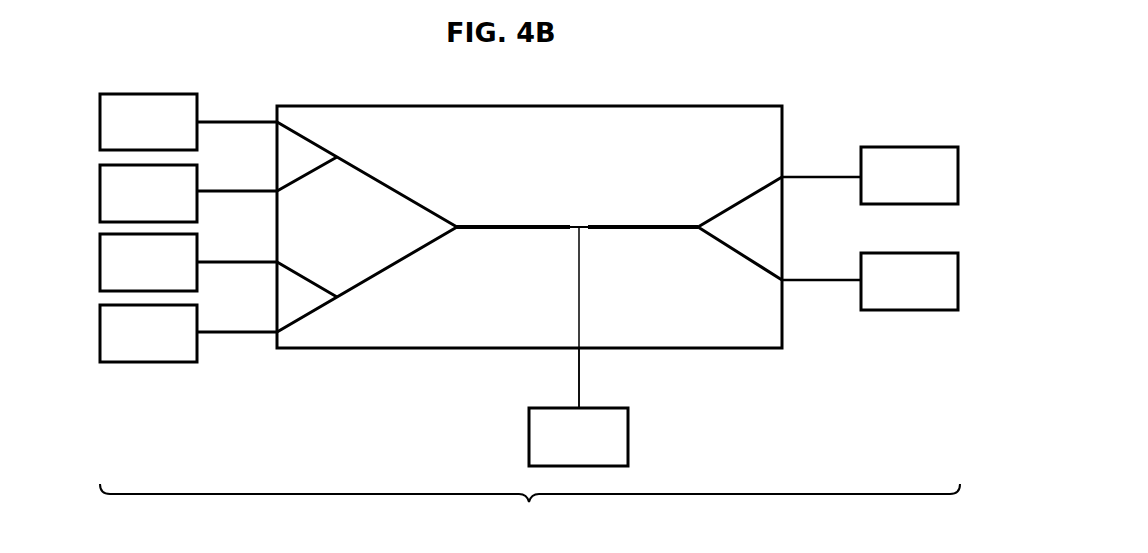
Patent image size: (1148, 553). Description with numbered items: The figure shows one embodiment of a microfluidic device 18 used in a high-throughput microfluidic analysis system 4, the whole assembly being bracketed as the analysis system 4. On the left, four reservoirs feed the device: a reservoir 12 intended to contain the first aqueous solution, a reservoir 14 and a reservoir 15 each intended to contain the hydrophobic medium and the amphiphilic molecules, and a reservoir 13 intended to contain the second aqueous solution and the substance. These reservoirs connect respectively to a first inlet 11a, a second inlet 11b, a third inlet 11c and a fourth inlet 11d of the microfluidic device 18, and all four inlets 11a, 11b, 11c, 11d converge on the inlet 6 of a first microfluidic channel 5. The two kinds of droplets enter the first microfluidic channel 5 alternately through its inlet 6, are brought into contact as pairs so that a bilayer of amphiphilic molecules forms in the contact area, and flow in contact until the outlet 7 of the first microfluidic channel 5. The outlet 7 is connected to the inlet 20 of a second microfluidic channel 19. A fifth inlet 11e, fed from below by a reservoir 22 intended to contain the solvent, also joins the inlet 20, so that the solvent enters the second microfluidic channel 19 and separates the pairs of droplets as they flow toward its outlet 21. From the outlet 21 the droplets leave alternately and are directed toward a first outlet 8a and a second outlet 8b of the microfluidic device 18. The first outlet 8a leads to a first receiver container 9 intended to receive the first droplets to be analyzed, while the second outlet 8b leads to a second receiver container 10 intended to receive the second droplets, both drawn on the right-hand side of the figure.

The microfluidic analysis system 4 is at (530, 511).
The first microfluidic channel 5 is at (515, 223).
The inlet of the first microfluidic channel 6 is at (457, 224).
The outlet of the first microfluidic channel 7 is at (575, 232).
The first outlet 8a is at (783, 176).
The second outlet 8b is at (783, 279).
The first receiver container 9 is at (910, 144).
The second receiver container 10 is at (910, 313).
The first inlet 11a is at (277, 122).
The second inlet 11b is at (277, 191).
The third inlet 11c is at (277, 262).
The fourth inlet 11d is at (277, 332).
The fifth inlet 11e is at (581, 350).
The reservoir for aqueous solution AS1 12 is at (97, 122).
The reservoir for aqueous solution AS2 and substance 13 is at (97, 332).
The reservoir for hydrophobic medium and amphiphilic molecules 14 is at (97, 191).
The reservoir for hydrophobic medium and amphiphilic molecules 15 is at (97, 262).
The microfluidic device 18 is at (624, 103).
The second microfluidic channel 19 is at (631, 223).
The inlet of the second microfluidic channel 20 is at (586, 225).
The outlet of the second microfluidic channel 21 is at (698, 225).
The solvent reservoir 22 is at (631, 436).